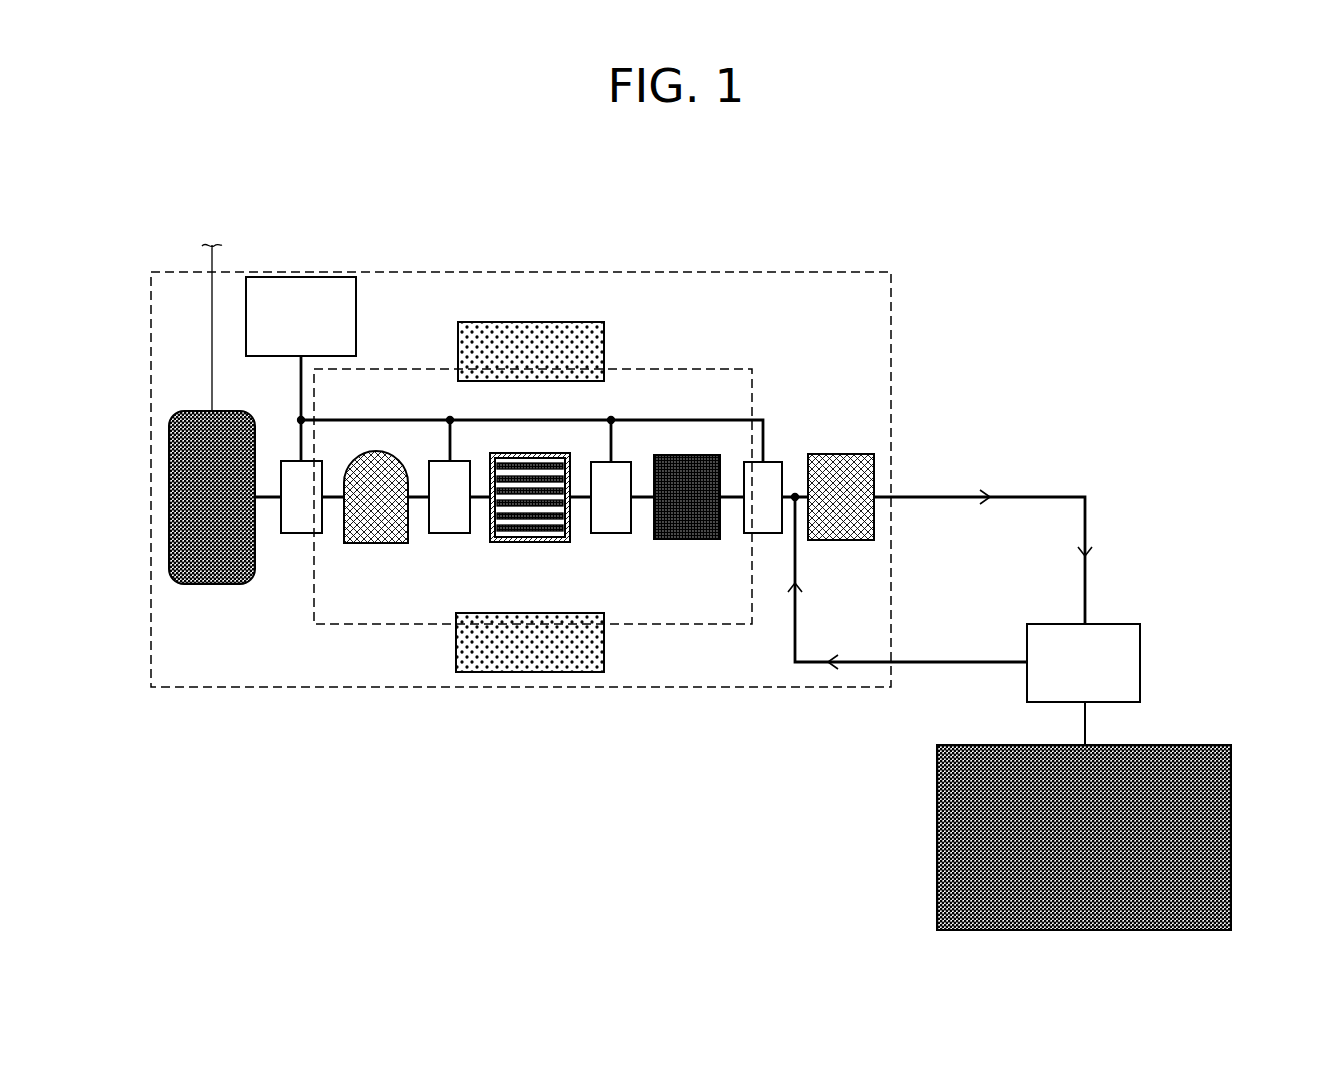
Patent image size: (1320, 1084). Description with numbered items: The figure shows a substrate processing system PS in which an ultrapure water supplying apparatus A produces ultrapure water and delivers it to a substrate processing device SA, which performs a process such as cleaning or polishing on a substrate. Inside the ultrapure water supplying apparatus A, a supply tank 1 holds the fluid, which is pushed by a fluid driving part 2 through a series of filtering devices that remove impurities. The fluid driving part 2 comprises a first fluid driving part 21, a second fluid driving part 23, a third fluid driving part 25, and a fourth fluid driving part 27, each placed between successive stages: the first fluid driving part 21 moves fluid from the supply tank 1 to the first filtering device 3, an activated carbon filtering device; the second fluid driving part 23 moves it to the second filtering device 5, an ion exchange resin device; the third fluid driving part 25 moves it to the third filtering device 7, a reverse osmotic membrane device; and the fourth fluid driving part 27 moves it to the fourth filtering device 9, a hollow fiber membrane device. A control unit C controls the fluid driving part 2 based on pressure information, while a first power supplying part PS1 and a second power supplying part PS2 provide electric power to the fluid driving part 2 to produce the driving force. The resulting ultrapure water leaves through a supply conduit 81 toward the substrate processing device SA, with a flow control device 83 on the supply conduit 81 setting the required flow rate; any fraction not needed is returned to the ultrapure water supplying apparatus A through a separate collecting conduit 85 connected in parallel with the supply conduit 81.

The substrate processing system PS is at (1117, 153).
The ultrapure water supplying apparatus A is at (152, 330).
The supply tank 1 is at (169, 497).
The control unit C is at (286, 277).
The fluid driving part 2 is at (792, 202).
The first fluid driving part 21 is at (318, 460).
The second fluid driving part 23 is at (441, 460).
The third fluid driving part 25 is at (623, 461).
The fourth fluid driving part 27 is at (775, 461).
The first power supplying part PS1 is at (511, 322).
The second power supplying part PS2 is at (479, 672).
The first filtering device 3 is at (369, 543).
The second filtering device 5 is at (545, 542).
The third filtering device 7 is at (677, 539).
The fourth filtering device 9 is at (838, 540).
The supply conduit 81 is at (1085, 522).
The flow control device 83 is at (1140, 662).
The collecting conduit 85 is at (905, 664).
The substrate processing device SA is at (1231, 836).